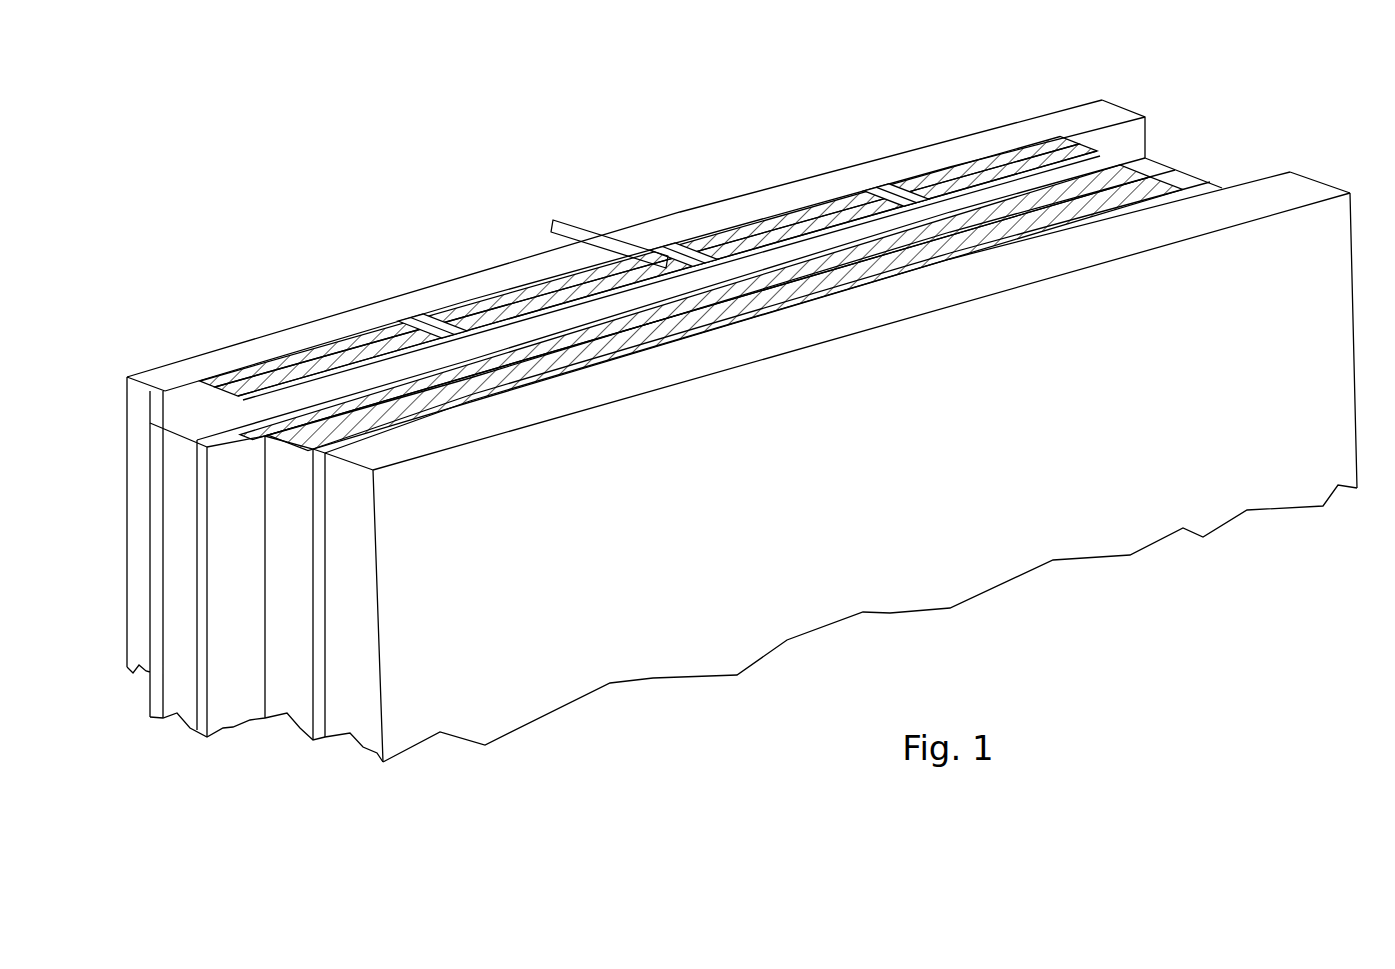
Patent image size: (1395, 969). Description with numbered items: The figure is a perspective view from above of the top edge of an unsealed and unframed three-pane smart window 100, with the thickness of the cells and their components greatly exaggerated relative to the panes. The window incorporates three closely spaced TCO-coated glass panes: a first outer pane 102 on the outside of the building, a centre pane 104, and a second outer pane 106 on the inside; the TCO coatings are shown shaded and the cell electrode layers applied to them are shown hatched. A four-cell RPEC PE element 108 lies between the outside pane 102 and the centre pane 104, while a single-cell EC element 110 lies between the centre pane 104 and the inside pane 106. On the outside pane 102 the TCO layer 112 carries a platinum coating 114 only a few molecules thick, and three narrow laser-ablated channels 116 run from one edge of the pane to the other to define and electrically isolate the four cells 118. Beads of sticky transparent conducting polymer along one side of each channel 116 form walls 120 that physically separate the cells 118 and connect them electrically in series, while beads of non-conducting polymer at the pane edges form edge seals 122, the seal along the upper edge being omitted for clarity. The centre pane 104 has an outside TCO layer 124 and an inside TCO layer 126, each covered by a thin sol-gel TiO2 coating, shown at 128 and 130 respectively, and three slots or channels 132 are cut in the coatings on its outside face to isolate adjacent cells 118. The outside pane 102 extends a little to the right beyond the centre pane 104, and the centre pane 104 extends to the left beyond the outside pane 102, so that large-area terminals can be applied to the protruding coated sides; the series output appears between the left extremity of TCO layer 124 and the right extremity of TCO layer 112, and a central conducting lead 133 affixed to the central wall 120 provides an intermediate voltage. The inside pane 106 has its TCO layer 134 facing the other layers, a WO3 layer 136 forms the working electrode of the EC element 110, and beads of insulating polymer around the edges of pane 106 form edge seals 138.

The smart window 100 is at (868, 116).
The first outer pane 102 is at (165, 380).
The centre pane 104 is at (1150, 165).
The second outer pane 106 is at (468, 638).
The RPEC PE element 108 is at (1122, 131).
The EC element 110 is at (1212, 166).
The TCO layer 112 is at (1145, 117).
The Pt coating 114 is at (968, 168).
The channels 116 is at (892, 185).
The cells 118 is at (926, 158).
The walls 120 is at (905, 203).
The edge seals 122 is at (1070, 150).
The outside TCO layer 124 is at (1143, 167).
The inside TCO layer 126 is at (1180, 160).
The TiO2 coating 128 is at (805, 232).
The TiO2 coating 130 is at (1040, 215).
The slots or channels 132 is at (882, 215).
The central conducting lead 133 is at (600, 206).
The TCO layer 134 is at (1290, 172).
The WO3 layer 136 is at (1110, 220).
The edge seals 138 is at (1195, 190).